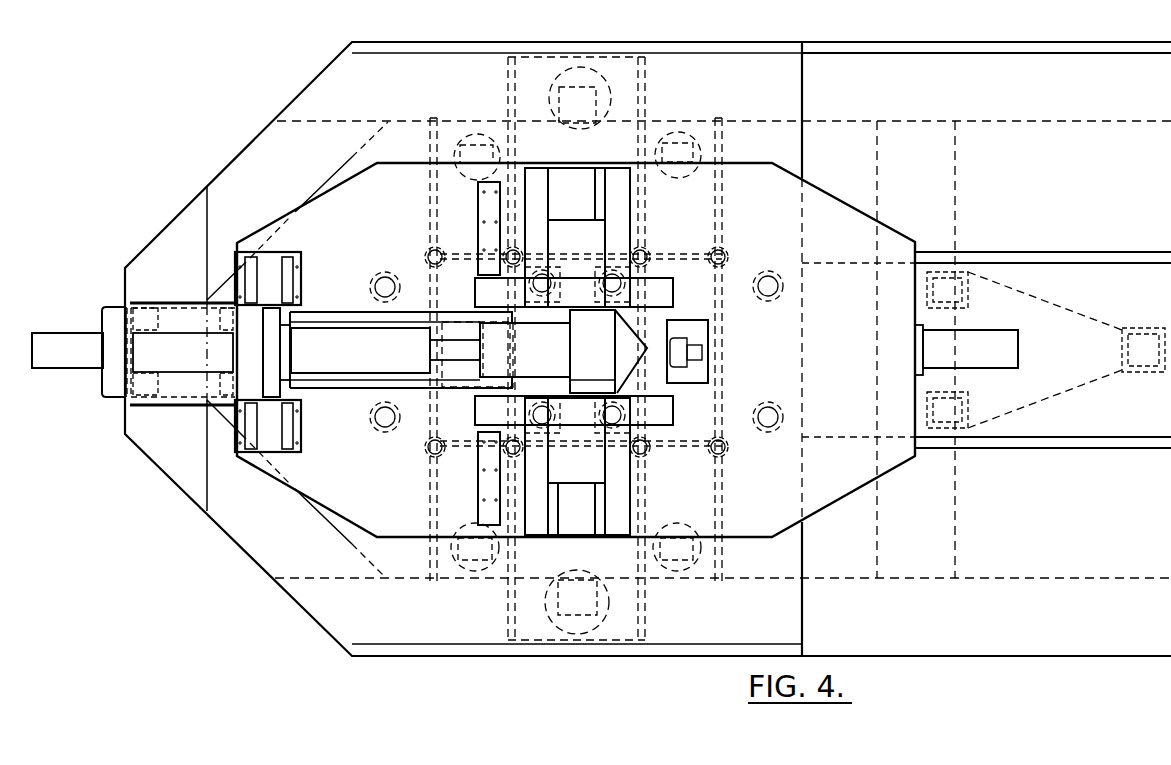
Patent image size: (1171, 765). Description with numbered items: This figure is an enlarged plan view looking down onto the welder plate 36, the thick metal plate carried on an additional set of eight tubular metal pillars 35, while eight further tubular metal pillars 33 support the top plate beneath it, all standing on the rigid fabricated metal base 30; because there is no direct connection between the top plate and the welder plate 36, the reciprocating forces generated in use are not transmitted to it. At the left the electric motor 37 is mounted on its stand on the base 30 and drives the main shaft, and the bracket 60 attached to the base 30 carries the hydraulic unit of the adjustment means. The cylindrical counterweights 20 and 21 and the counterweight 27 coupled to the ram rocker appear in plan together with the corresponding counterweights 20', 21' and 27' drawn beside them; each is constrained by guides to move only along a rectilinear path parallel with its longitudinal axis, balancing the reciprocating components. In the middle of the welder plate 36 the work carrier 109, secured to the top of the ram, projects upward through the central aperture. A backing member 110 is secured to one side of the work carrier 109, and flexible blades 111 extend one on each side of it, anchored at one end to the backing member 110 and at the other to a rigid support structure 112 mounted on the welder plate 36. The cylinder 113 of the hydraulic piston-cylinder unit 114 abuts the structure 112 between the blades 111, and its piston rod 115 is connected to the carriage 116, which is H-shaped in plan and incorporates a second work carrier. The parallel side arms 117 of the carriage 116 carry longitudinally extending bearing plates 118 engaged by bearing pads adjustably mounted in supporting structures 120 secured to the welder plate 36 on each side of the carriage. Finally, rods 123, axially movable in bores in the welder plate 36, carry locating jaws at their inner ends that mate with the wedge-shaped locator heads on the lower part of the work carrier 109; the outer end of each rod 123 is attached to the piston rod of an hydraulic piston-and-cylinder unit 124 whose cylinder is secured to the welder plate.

The cylindrical counterweight 20 is at (464, 575).
The guide hole 20' is at (693, 579).
The cylindrical counterweight 21 is at (465, 330).
The guide hole 21' is at (702, 329).
The cylindrical counterweight 27 is at (576, 379).
The guide column bore 27' is at (625, 94).
The base 30 is at (1068, 633).
The tubular metal pillars 33 is at (713, 457).
The tubular metal pillars 35 is at (765, 402).
The welder plate 36 is at (832, 217).
The electric motor 37 is at (110, 320).
The bracket 60 is at (1137, 330).
The work carrier 109 is at (603, 373).
The backing member 110 is at (650, 324).
The flexible blades 111 is at (327, 385).
The rigid support structure 112 is at (263, 270).
The cylinder 113 is at (333, 337).
The hydraulic piston-cylinder unit 114 is at (405, 345).
The piston rod 115 is at (463, 352).
The carriage 116 is at (513, 372).
The side arms 117 is at (450, 462).
The bearing plates 118 is at (653, 287).
The supporting structures 120 is at (617, 218).
The rods 123 is at (702, 355).
The hydraulic piston-and-cylinder unit 124 is at (987, 330).